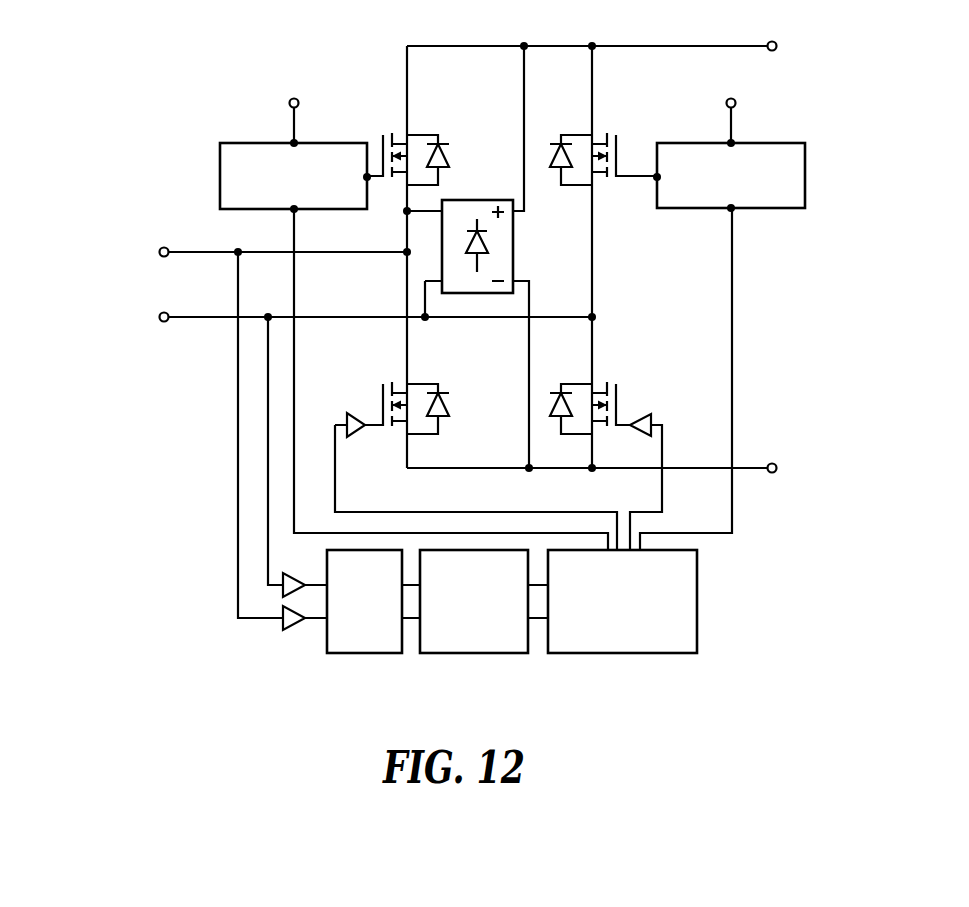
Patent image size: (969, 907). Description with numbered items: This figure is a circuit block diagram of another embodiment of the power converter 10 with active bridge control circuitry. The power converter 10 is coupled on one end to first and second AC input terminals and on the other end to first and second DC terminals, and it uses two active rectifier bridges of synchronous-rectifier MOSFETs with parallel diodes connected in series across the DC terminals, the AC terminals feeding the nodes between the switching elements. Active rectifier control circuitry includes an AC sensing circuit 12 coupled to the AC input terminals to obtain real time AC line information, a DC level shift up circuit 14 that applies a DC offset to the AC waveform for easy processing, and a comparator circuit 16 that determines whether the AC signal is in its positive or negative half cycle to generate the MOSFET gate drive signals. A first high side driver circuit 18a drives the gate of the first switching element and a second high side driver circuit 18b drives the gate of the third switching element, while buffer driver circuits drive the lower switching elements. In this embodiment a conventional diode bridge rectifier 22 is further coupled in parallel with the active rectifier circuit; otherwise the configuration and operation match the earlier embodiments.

The power converter 10 is at (112, 93).
The AC sensing circuit 12 is at (363, 653).
The DC level shift up circuit 14 is at (475, 653).
The comparator circuit 16 is at (622, 653).
The first high side driver circuit 18a is at (220, 177).
The second high side driver circuit 18b is at (805, 177).
The conventional diode bridge rectifier 22 is at (520, 247).